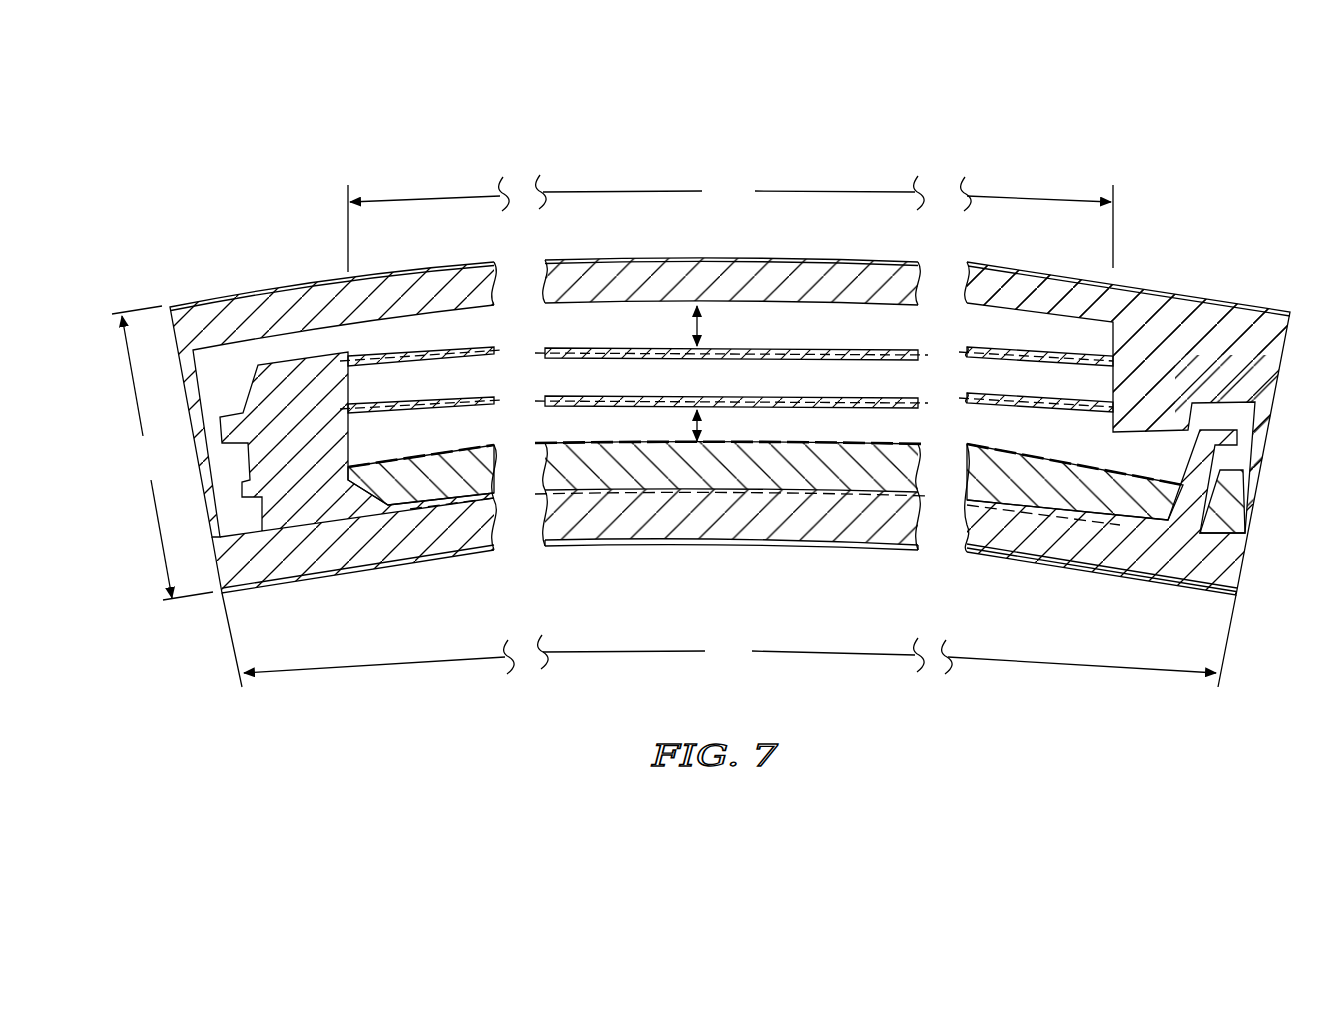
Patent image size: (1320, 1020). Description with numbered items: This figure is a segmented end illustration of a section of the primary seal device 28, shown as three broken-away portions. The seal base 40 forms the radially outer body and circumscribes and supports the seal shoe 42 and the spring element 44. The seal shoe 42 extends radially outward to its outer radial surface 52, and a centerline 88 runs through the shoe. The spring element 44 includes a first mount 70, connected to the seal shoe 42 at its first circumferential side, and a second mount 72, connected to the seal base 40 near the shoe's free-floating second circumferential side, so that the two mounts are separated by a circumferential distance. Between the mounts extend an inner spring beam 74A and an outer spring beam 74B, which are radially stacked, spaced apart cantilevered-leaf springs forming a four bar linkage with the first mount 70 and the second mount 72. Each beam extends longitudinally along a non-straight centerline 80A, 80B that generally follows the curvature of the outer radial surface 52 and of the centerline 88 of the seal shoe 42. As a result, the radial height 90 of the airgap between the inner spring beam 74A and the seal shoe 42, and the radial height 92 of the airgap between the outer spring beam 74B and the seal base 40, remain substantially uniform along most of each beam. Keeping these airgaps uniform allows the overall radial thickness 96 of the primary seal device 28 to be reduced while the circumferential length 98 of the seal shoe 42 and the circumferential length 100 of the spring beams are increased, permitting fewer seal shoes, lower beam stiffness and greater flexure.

The primary seal device 28 is at (730, 372).
The seal base 40 is at (733, 250).
The seal shoe 42 is at (781, 555).
The spring element 44 is at (602, 418).
The outer radial surface 52 is at (838, 443).
The first mount 70 is at (244, 385).
The second mount 72 is at (1201, 411).
The inner spring beam 74A is at (418, 416).
The outer spring beam 74B is at (412, 350).
The centerline 80A is at (795, 397).
The centerline 80B is at (772, 349).
The centerline 88 is at (474, 500).
The radial height 90 is at (694, 425).
The radial height 92 is at (694, 325).
The overall radial thickness 96 is at (162, 453).
The circumferential length 98 is at (729, 640).
The circumferential length 100 is at (730, 223).